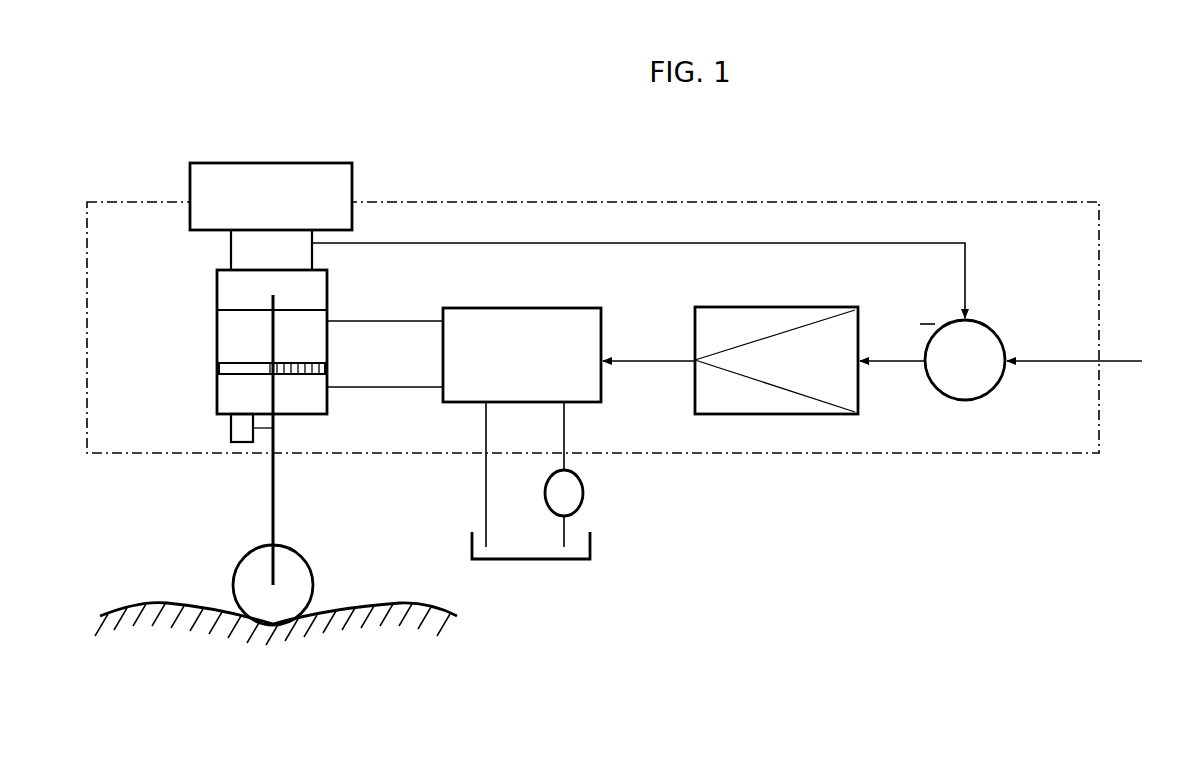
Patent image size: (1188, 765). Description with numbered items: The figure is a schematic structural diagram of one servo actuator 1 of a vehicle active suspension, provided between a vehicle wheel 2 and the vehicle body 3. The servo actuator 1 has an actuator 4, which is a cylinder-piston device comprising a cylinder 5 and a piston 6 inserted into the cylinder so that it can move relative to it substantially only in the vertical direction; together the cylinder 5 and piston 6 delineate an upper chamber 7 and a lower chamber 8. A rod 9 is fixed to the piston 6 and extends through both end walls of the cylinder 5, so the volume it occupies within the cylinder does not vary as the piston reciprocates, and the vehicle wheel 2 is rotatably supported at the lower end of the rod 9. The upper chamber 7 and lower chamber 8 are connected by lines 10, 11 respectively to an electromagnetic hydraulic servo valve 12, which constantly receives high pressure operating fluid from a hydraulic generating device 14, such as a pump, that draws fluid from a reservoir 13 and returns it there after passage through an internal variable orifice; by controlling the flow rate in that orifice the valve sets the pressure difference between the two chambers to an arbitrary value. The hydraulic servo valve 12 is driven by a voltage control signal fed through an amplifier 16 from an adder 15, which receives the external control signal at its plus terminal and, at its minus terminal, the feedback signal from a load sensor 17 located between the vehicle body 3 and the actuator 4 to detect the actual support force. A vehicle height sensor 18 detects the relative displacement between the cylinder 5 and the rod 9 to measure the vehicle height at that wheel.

The servo actuator 1 is at (937, 202).
The vehicle wheel 2 is at (312, 588).
The vehicle body 3 is at (280, 163).
The actuator 4 is at (306, 422).
The cylinder 5 is at (328, 378).
The piston 6 is at (302, 363).
The upper chamber 7 is at (230, 343).
The lower chamber 8 is at (228, 397).
The rod 9 is at (273, 503).
The line 10 is at (413, 318).
The line 11 is at (430, 385).
The hydraulic servo valve 12 is at (535, 307).
The reservoir 13 is at (527, 560).
The hydraulic generating device 14 is at (583, 490).
The adder 15 is at (963, 402).
The amplifier 16 is at (757, 415).
The load sensor 17 is at (298, 255).
The vehicle height sensor 18 is at (230, 430).